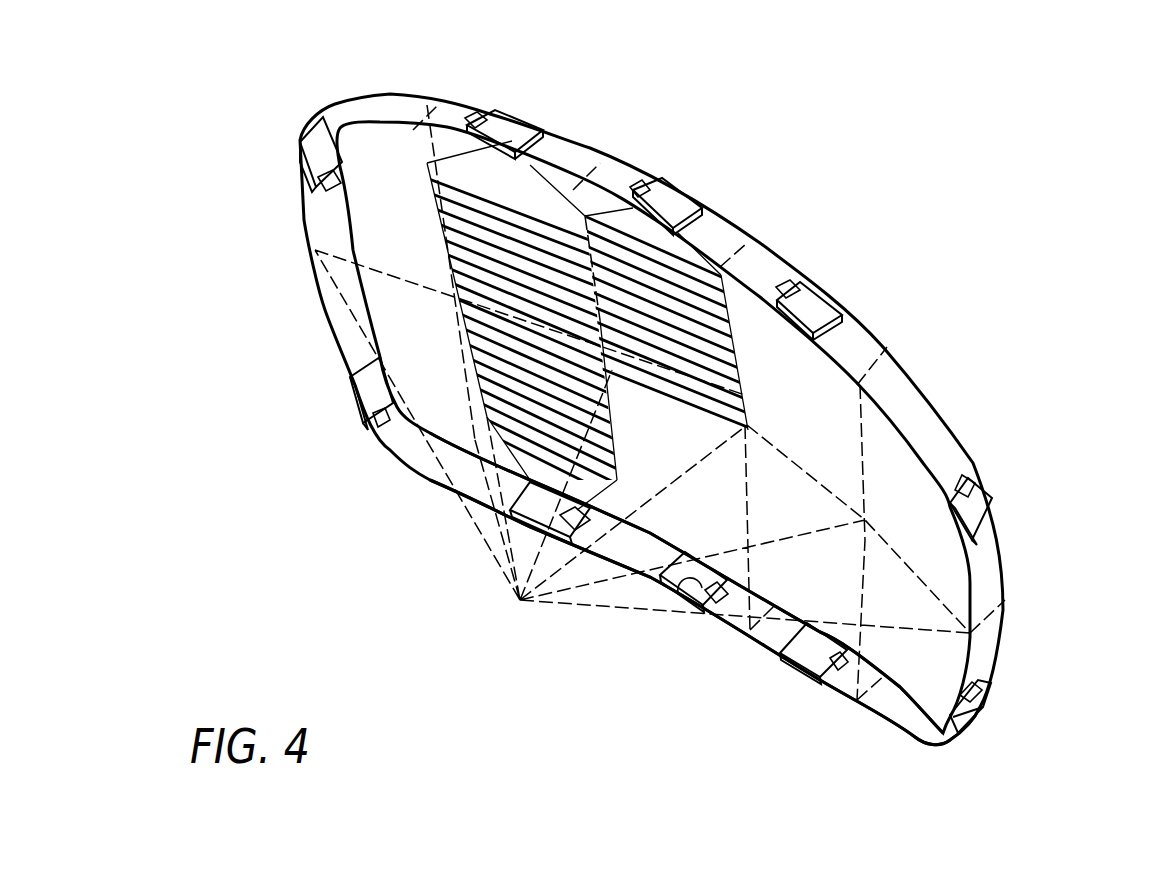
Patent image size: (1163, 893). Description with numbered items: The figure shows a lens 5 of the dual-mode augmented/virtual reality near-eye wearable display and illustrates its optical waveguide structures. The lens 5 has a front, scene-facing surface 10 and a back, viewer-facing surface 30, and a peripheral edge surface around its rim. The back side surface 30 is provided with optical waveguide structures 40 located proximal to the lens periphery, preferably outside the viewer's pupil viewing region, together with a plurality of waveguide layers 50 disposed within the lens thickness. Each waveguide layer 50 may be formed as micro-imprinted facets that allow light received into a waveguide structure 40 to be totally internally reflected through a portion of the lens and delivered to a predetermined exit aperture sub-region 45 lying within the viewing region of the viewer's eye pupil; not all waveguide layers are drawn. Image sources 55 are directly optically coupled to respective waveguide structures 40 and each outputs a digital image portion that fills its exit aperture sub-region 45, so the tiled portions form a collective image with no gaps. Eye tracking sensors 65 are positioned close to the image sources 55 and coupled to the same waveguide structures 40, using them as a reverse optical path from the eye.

The lens 5 is at (1008, 393).
The front side, scene-facing surface 10 is at (765, 243).
The back side, viewer facing surface 30 is at (930, 670).
The optical waveguide structure 40 is at (533, 463).
The exit aperture sub-region 45 is at (820, 387).
The waveguide layer 50 is at (603, 437).
The image source 55 is at (530, 520).
The eye tracking sensor 65 is at (682, 592).